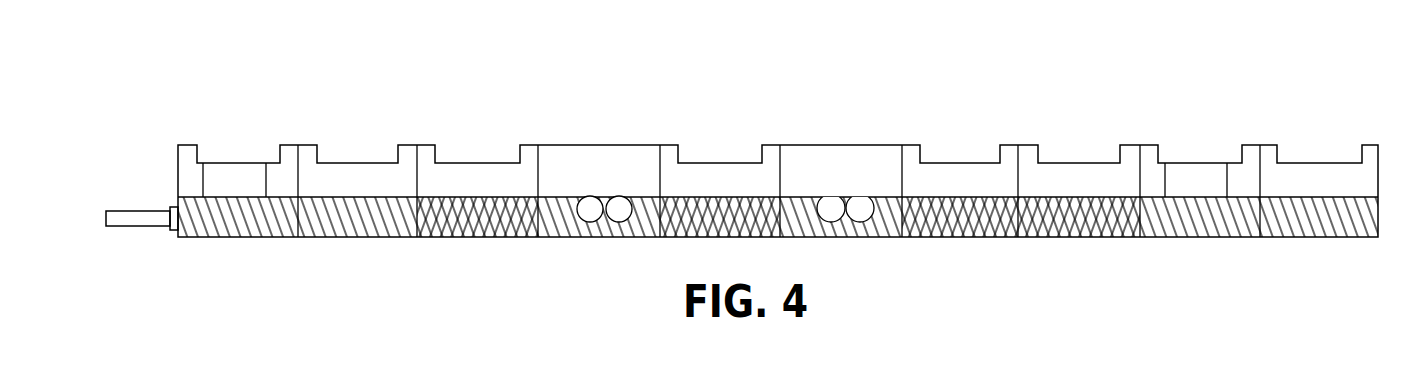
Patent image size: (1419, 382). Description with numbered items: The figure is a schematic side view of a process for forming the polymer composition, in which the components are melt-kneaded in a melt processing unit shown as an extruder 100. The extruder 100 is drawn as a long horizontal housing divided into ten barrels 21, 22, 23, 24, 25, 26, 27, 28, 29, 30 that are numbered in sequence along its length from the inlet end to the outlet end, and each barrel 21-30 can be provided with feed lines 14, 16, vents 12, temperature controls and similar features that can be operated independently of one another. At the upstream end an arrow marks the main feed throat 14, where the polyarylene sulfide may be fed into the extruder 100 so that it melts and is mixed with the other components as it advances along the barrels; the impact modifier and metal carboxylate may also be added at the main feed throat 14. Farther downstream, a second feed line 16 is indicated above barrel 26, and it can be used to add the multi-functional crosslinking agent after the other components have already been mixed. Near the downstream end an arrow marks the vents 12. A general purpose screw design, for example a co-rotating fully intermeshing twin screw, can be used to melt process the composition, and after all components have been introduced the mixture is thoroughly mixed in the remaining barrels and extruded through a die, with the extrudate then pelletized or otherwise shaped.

The extruder 100 is at (323, 88).
The vents 12 is at (1186, 155).
The main feed throat 14 is at (230, 157).
The second feed line 16 is at (850, 142).
The barrel 21 is at (293, 191).
The barrel 22 is at (358, 191).
The barrel 23 is at (478, 191).
The barrel 24 is at (598, 191).
The barrel 25 is at (720, 191).
The barrel 26 is at (841, 191).
The barrel 27 is at (961, 191).
The barrel 28 is at (1080, 191).
The barrel 29 is at (1255, 191).
The barrel 30 is at (1320, 191).